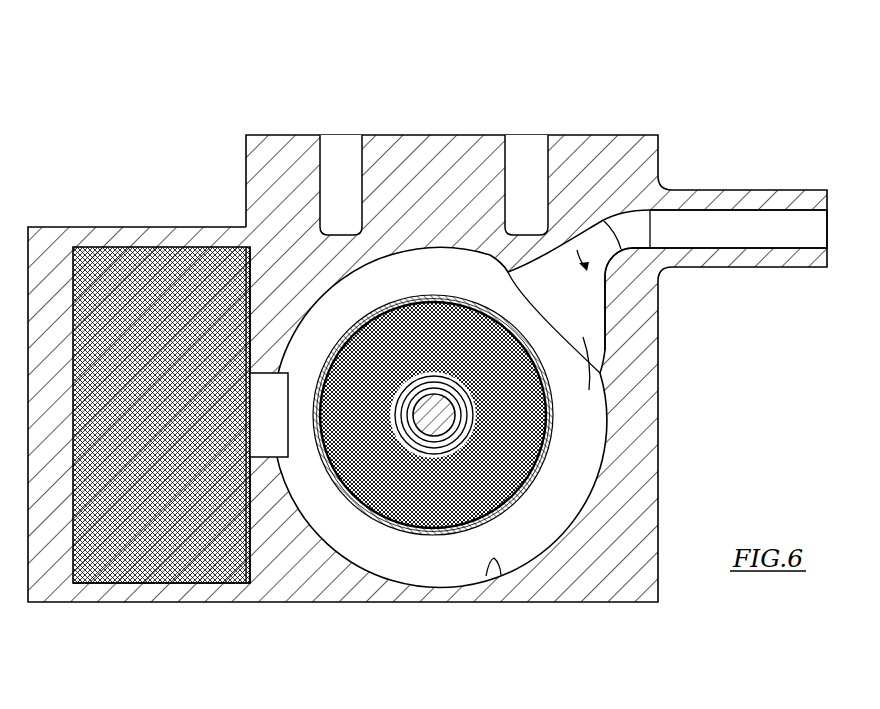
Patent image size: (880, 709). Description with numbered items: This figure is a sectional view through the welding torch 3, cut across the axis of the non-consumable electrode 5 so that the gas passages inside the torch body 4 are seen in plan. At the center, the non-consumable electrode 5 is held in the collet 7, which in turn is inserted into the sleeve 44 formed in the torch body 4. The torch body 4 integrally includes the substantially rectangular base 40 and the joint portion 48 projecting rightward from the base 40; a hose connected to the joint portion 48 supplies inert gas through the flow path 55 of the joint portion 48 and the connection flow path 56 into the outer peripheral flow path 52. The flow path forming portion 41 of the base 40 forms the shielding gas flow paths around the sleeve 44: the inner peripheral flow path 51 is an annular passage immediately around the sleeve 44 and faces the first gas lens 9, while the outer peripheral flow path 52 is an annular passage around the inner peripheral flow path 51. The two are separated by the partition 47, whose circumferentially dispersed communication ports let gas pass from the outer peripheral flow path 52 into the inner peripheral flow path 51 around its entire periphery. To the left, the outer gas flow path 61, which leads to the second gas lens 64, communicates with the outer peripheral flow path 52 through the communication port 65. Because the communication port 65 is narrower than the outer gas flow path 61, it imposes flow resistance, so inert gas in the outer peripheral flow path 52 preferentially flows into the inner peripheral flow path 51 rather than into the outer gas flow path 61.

The welding torch 3 is at (767, 428).
The torch body 4 is at (685, 510).
The non-consumable electrode 5 is at (428, 373).
The collet 7 is at (463, 300).
The first gas lens 9 is at (523, 500).
The base 40 is at (660, 370).
The flow path forming portion 41 is at (245, 178).
The sleeve 44 is at (398, 533).
The partition 47 is at (453, 537).
The joint portion 48 is at (750, 190).
The inner peripheral flow path 51 is at (363, 500).
The outer peripheral flow path 52 is at (494, 562).
The flow path 55 is at (753, 240).
The connection flow path 56 is at (637, 253).
The outer gas flow path 61 is at (240, 273).
The second gas lens 64 is at (132, 583).
The communication port 65 is at (223, 583).